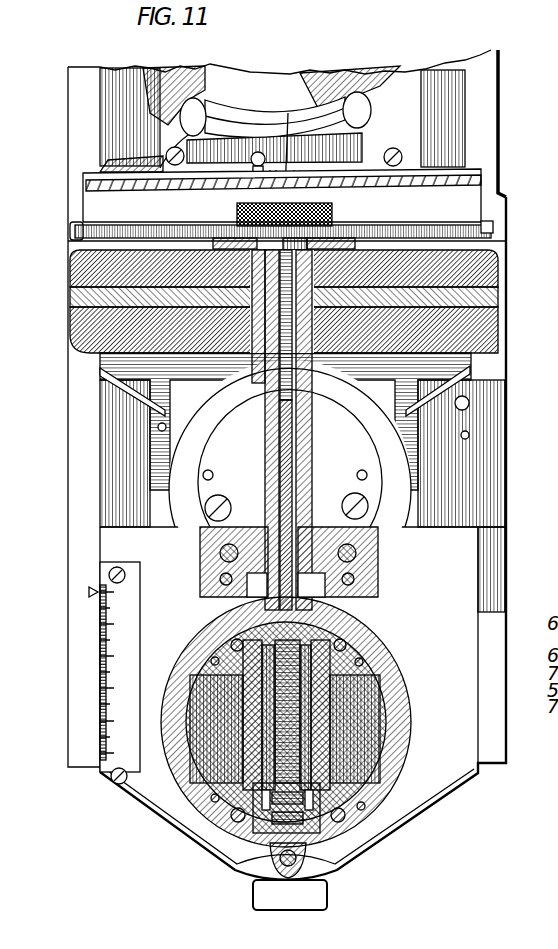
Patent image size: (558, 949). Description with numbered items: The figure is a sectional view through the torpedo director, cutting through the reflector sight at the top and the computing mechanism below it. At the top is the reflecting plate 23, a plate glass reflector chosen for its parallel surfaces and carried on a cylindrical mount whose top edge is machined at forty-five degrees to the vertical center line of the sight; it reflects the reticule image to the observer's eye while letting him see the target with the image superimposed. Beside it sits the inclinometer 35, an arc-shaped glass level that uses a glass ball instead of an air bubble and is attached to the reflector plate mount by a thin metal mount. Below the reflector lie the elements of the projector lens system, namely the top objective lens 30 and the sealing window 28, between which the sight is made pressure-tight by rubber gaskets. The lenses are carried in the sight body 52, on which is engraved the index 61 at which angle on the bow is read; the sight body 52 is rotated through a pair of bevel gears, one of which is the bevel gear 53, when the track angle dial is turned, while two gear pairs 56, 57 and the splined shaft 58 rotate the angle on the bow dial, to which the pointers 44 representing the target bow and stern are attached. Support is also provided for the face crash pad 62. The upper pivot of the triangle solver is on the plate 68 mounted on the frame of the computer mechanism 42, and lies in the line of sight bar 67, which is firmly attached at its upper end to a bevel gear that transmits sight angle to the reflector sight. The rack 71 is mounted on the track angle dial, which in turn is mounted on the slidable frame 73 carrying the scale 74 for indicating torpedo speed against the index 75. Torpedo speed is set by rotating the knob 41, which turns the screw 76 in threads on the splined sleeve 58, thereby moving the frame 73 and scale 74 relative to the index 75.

The reflecting plate 23 is at (398, 88).
The sealing window 28 is at (331, 166).
The top objective lens 30 is at (402, 143).
The inclinometer 35 is at (291, 113).
The knob 41 is at (478, 205).
The computer mechanism frame 42 is at (155, 500).
The pointer 44 is at (163, 160).
The sight body 52 is at (160, 169).
The bevel gear 53 is at (377, 587).
The gear pair 56 is at (371, 222).
The gear pair 57 is at (492, 230).
The splined shaft 58 is at (300, 486).
The index 61 is at (303, 123).
The face crash pad 62 is at (500, 272).
The line of sight bar 67 is at (265, 457).
The plate 68 is at (336, 437).
The rack 71 is at (300, 737).
The slidable frame 73 is at (406, 803).
The scale 74 is at (120, 643).
The index 75 is at (88, 592).
The screw 76 is at (290, 328).